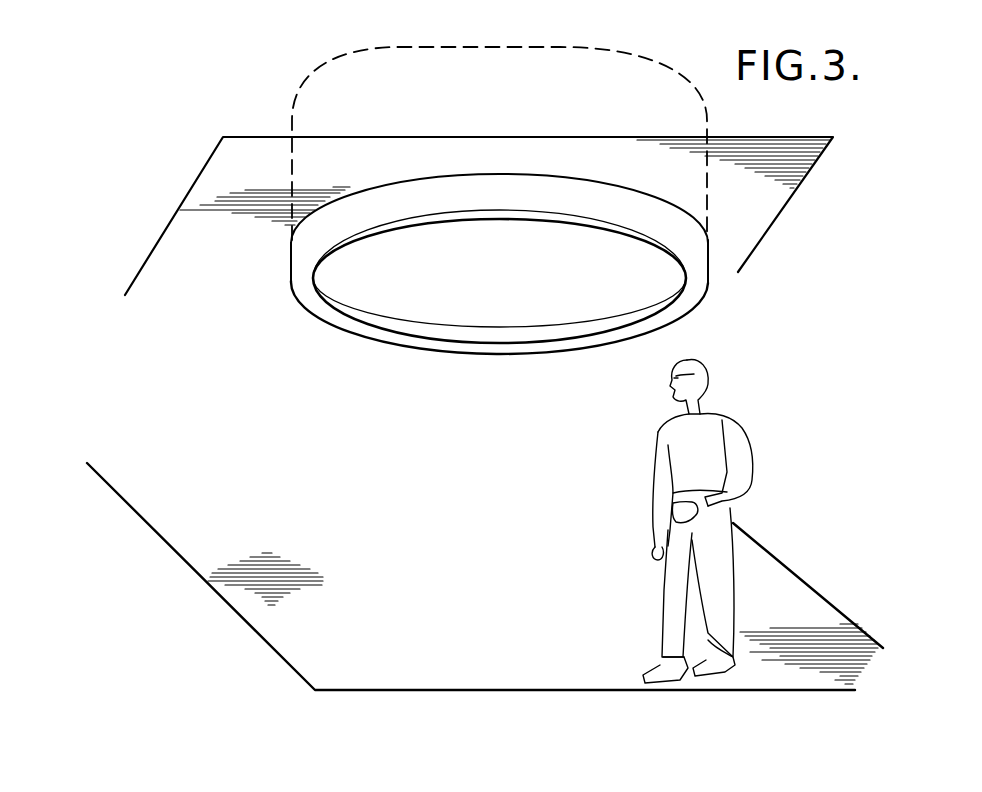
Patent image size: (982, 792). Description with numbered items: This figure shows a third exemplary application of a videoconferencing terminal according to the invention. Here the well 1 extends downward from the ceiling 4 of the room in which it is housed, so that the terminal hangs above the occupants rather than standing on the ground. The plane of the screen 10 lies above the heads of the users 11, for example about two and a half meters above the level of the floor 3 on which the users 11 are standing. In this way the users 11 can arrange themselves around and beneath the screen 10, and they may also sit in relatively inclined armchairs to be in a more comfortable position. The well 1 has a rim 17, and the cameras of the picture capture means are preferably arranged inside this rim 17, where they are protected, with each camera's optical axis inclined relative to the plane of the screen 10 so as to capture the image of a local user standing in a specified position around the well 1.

The well 1 is at (510, 223).
The floor 3 is at (760, 580).
The ceiling 4 is at (235, 157).
The screen 10 is at (430, 297).
The users 11 is at (692, 437).
The rim 17 is at (312, 303).